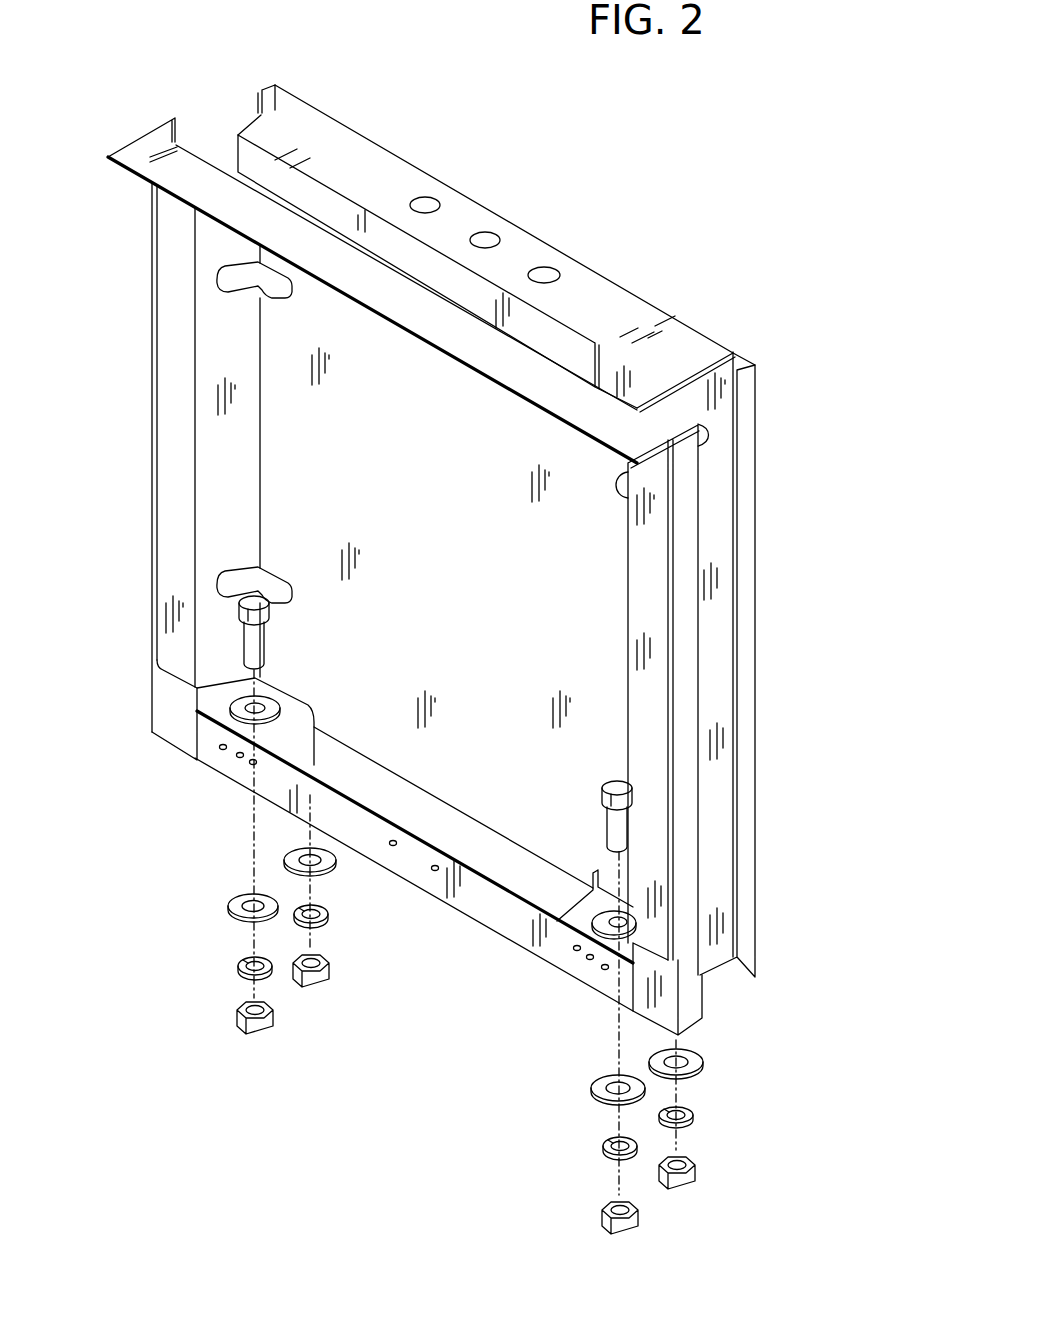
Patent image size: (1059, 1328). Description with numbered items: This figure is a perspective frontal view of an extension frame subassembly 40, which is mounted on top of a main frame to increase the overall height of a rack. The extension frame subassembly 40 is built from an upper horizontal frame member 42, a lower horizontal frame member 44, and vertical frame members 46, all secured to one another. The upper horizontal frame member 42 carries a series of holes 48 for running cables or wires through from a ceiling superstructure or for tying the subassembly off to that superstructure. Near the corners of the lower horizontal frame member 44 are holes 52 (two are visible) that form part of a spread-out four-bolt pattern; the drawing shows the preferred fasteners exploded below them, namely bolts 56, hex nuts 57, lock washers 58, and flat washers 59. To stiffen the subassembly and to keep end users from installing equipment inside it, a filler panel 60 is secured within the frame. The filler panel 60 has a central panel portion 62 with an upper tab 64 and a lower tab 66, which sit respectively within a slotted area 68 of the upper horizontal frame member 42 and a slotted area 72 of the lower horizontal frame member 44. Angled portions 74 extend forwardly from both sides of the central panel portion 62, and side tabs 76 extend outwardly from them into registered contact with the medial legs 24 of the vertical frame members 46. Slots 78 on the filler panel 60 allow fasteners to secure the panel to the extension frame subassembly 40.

The medial leg 24 is at (170, 720).
The extension frame subassembly 40 is at (745, 288).
The upper horizontal frame member 42 is at (335, 163).
The lower horizontal frame member 44 is at (507, 933).
The vertical frame member 46 is at (758, 458).
The holes 48 is at (485, 237).
The holes 52 is at (243, 710).
The bolt 56 is at (255, 648).
The hex nut 57 is at (237, 1020).
The lock washer 58 is at (238, 970).
The flat washer 59 is at (228, 910).
The filler panel 60 is at (449, 598).
The central panel portion 62 is at (282, 487).
The upper tab 64 is at (540, 330).
The lower tab 66 is at (424, 818).
The slotted area 68 is at (217, 155).
The slotted area 72 is at (301, 748).
The angled portion 74 is at (205, 415).
The side tab 76 is at (175, 327).
The slot 78 is at (227, 273).